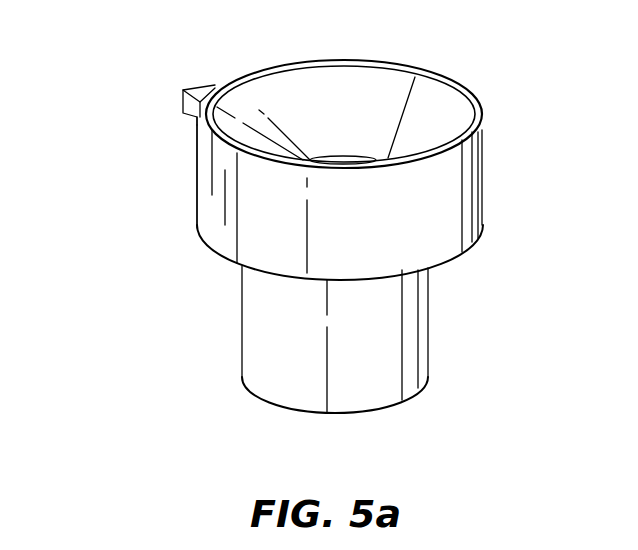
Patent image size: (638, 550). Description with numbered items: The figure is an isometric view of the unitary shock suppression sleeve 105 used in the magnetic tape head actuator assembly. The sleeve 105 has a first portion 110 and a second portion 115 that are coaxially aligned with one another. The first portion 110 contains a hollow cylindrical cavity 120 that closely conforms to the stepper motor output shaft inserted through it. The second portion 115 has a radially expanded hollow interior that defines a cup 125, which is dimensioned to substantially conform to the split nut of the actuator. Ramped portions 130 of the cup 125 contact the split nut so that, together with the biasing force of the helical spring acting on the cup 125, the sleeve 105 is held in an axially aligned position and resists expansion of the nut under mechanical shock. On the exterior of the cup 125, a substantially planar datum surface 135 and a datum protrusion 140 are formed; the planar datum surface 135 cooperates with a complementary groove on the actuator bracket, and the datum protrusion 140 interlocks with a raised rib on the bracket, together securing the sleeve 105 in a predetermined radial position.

The shock suppression sleeve 105 is at (137, 298).
The first portion 110 is at (388, 342).
The second portion 115 is at (450, 208).
The hollow cylindrical cavity 120 is at (375, 412).
The cup 125 is at (347, 100).
The ramped portions 130 is at (437, 115).
The planar datum surface 135 is at (205, 190).
The datum protrusion 140 is at (182, 93).